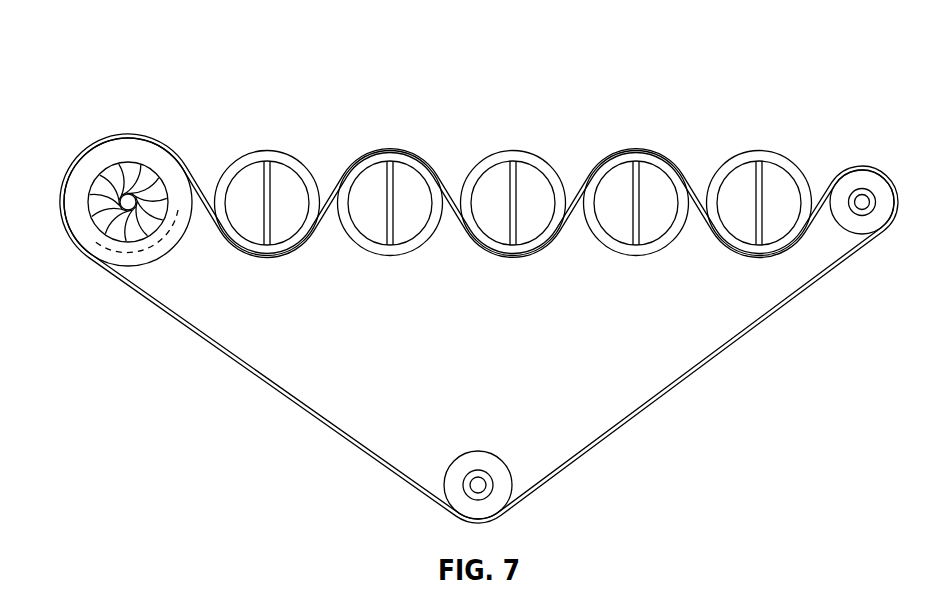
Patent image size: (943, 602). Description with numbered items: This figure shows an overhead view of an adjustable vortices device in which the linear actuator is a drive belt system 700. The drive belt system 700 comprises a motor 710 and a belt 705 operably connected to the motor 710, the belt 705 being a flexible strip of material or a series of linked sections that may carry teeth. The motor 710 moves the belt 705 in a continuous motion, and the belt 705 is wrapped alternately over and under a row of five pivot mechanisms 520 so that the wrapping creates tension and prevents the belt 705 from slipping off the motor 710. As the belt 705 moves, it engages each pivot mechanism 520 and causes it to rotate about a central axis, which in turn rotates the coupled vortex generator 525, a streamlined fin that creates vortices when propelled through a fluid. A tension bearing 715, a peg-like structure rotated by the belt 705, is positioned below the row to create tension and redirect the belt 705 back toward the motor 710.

The drive belt system 700 is at (126, 45).
The belt 705 is at (297, 414).
The motor 710 is at (150, 136).
The vortex generator 525 is at (513, 163).
The pivot mechanism 520 is at (778, 178).
The tension bearing 715 is at (505, 495).